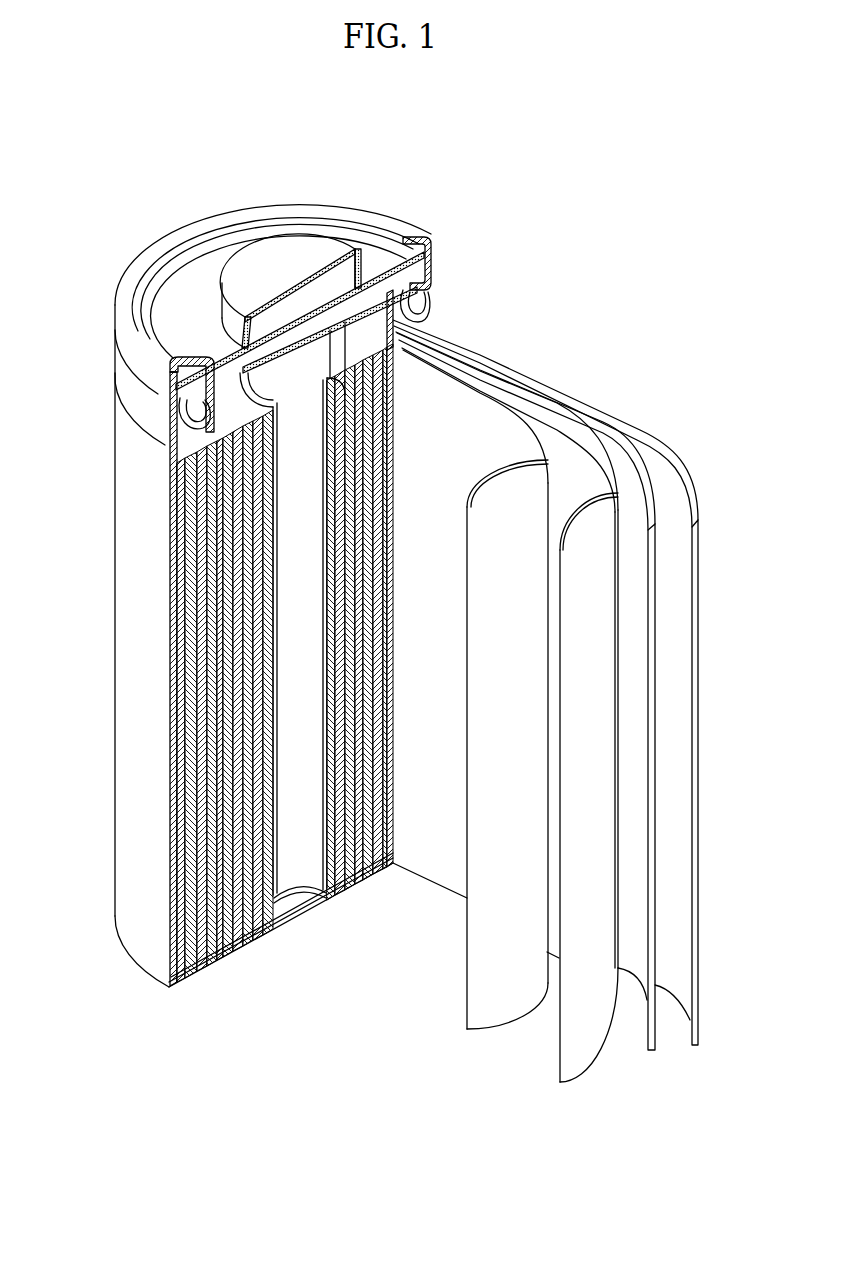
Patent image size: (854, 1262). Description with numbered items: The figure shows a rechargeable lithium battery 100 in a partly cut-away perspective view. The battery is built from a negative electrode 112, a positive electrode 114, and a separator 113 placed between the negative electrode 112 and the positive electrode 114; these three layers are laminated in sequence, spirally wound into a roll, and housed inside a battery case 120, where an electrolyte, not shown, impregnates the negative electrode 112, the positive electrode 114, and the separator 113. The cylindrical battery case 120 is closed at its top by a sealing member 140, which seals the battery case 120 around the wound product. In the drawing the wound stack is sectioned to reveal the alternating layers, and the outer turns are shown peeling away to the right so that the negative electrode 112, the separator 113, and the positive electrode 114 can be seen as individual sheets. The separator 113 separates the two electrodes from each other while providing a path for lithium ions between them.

The rechargeable lithium battery 100 is at (486, 207).
The negative electrode 112 is at (667, 466).
The separator 113 is at (493, 393).
The positive electrode 114 is at (557, 430).
The battery case 120 is at (117, 548).
The sealing member 140 is at (277, 262).